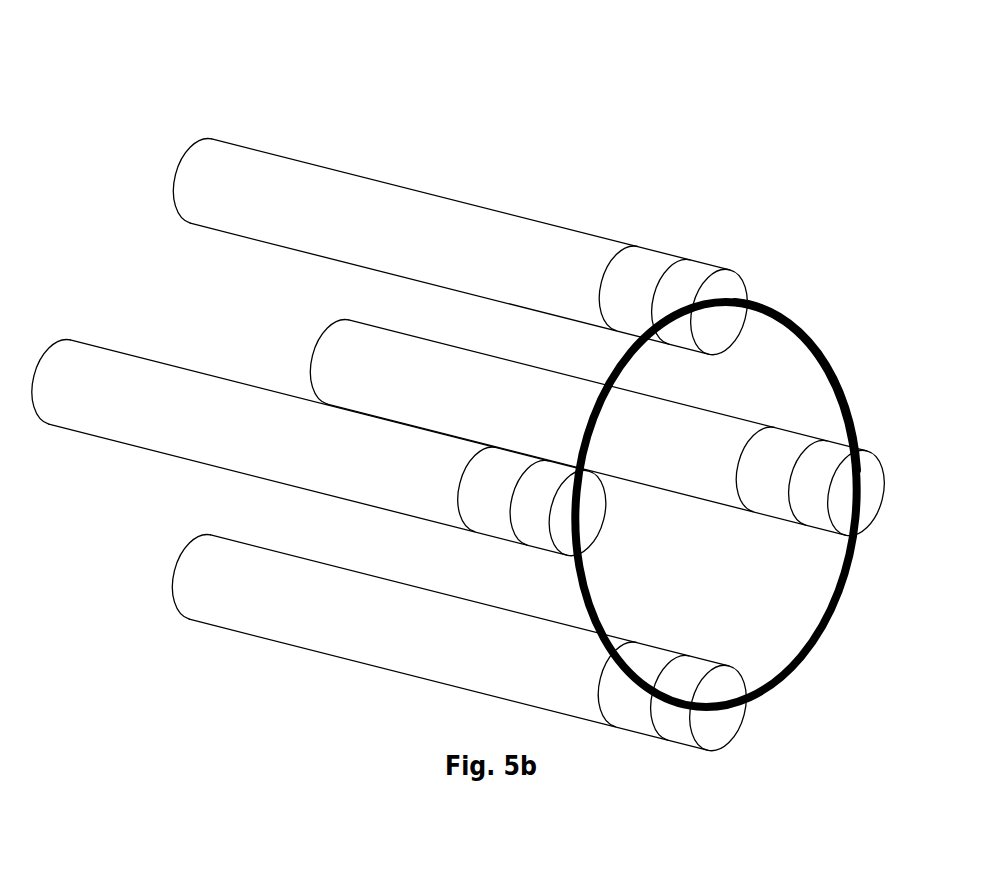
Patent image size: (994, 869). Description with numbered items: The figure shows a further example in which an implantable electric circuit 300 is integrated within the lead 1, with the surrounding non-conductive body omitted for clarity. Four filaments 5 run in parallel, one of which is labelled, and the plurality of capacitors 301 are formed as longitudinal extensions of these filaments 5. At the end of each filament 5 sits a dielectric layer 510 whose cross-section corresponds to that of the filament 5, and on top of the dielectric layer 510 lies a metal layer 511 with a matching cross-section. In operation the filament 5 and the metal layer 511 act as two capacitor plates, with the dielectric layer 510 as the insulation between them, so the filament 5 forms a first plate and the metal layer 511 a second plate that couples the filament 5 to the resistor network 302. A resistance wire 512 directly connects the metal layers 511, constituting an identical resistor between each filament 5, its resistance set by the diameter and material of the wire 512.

The lead 1 is at (563, 63).
The filament 5 is at (313, 183).
The implantable electric circuit 300 is at (802, 171).
The capacitor 301 is at (639, 210).
The resistor network 302 is at (836, 311).
The dielectric layer 510 is at (649, 260).
The metal layer 511 is at (714, 282).
The resistance wire 512 is at (848, 397).